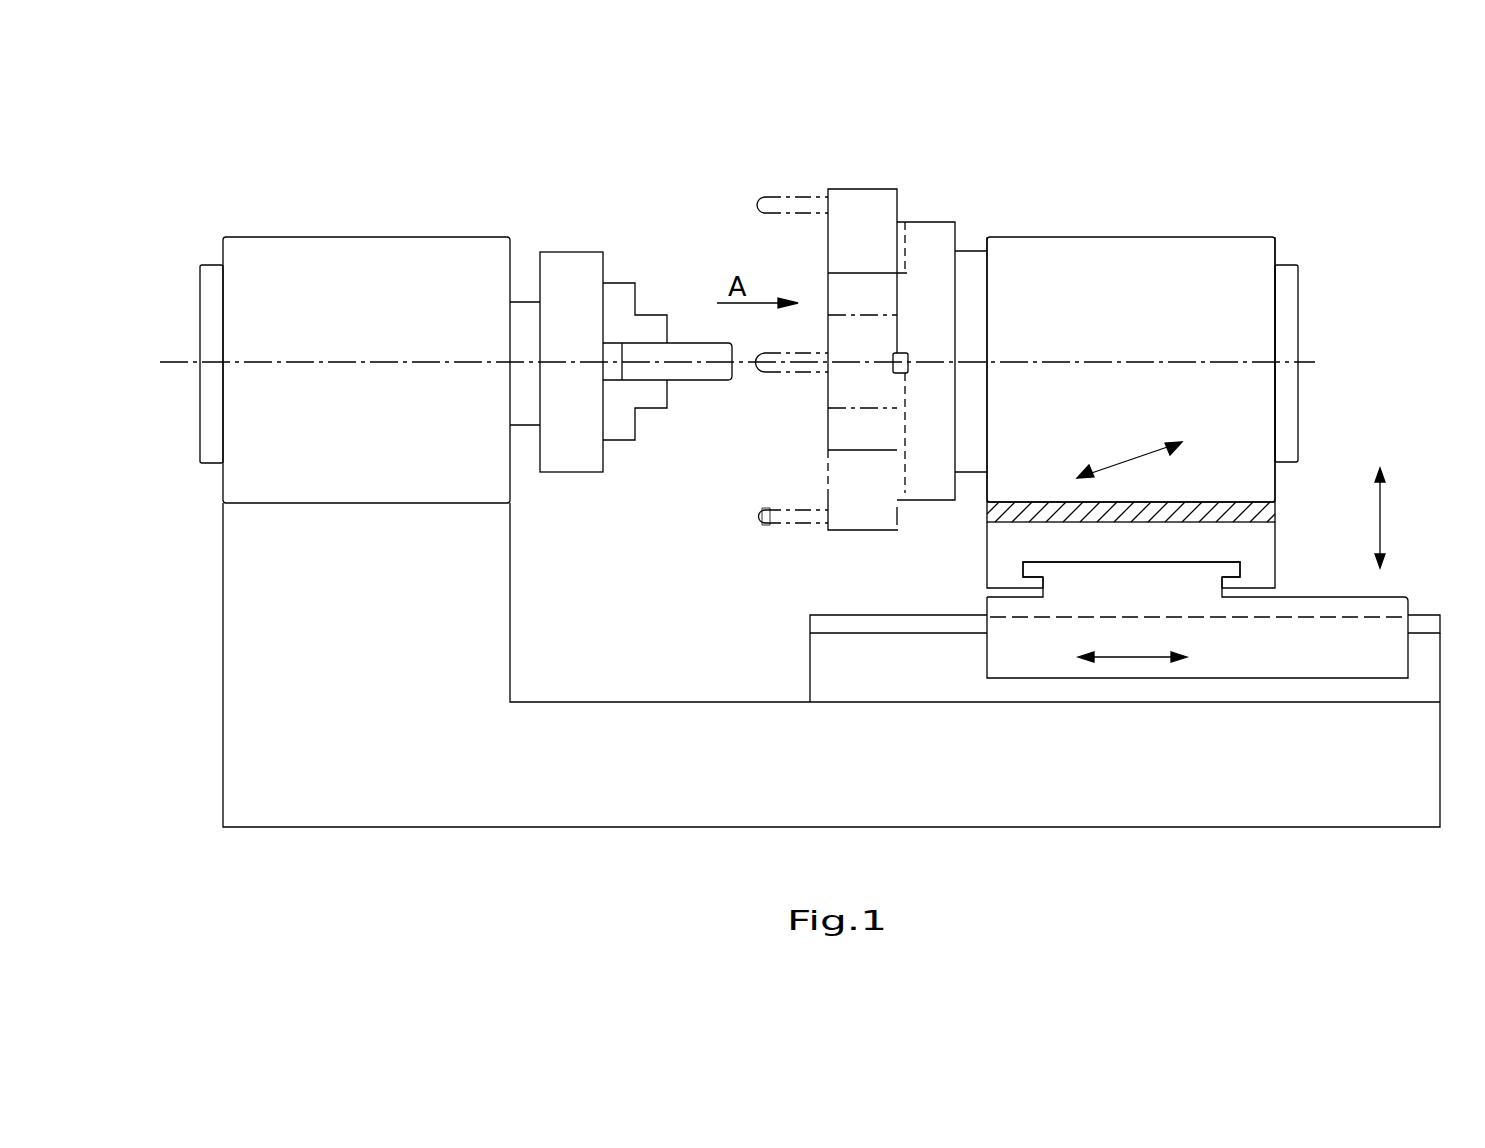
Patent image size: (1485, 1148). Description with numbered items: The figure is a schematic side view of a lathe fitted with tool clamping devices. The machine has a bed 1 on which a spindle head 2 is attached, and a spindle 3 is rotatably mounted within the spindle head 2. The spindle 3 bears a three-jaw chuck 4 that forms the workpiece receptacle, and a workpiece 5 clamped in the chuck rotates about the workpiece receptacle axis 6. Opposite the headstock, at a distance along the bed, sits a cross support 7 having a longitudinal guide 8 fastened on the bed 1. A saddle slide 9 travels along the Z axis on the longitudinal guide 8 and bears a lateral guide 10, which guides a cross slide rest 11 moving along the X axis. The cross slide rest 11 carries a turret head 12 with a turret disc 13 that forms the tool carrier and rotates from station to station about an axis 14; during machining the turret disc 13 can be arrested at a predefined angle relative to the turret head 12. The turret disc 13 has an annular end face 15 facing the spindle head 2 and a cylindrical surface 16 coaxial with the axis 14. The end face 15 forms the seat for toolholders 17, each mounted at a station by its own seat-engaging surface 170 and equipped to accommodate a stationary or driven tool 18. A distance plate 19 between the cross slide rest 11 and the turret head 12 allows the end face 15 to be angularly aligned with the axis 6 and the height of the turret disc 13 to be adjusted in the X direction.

The bed 1 is at (652, 800).
The spindle head 2 is at (448, 258).
The spindle 3 is at (522, 315).
The three-jaw chuck 4 is at (580, 272).
The workpiece 5 is at (692, 375).
The workpiece receptacle axis 6 is at (327, 363).
The cross support 7 is at (967, 592).
The longitudinal guide 8 is at (843, 657).
The saddle slide 9 is at (1380, 605).
The lateral guide 10 is at (1145, 580).
The cross slide rest 11 is at (1262, 547).
The turret head 12 is at (1144, 255).
The turret disc 13 is at (933, 238).
The axis 14 is at (1137, 360).
The end face 15 is at (882, 298).
The cylindrical surface 16 is at (842, 427).
The toolholder 17 is at (842, 518).
The tool 18 is at (773, 513).
The distance plate 19 is at (1170, 505).
The seat-engaging surface 170 is at (905, 525).